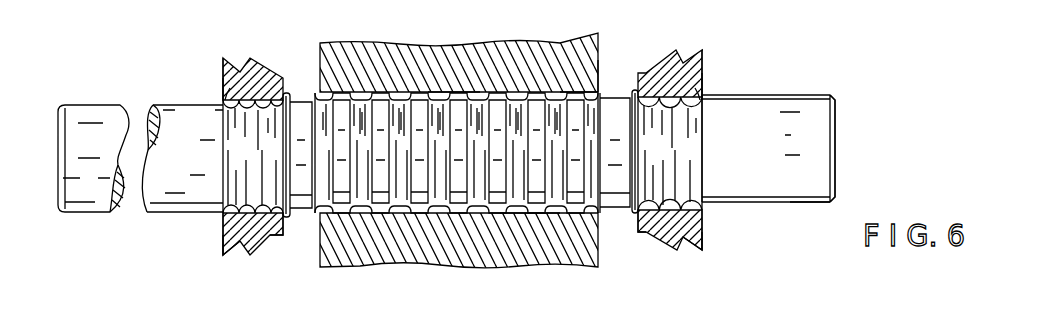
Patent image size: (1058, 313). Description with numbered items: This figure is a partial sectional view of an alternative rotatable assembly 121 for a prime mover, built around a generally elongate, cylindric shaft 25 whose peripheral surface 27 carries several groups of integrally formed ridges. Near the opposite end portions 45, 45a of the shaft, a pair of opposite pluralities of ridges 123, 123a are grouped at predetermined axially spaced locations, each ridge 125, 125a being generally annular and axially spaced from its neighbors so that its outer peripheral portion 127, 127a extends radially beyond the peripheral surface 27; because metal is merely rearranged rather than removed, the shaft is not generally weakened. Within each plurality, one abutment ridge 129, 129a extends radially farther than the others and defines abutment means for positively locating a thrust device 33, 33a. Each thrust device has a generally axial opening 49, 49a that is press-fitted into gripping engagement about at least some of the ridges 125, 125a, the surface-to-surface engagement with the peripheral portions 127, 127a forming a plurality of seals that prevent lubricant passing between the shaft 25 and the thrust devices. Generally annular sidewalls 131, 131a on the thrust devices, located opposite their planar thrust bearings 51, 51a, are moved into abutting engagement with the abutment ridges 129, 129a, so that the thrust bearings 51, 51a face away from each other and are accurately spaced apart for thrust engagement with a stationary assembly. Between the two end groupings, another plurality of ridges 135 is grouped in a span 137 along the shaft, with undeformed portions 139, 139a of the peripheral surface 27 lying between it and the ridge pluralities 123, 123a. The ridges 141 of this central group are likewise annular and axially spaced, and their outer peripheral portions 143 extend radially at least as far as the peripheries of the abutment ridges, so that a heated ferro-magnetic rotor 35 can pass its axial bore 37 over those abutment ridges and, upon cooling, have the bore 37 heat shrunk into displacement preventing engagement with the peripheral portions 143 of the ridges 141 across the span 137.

The rotatable assembly 121 is at (781, 63).
The plurality of ridges 123 is at (222, 201).
The plurality of ridges 123a is at (716, 197).
The ridge 125 is at (256, 104).
The ridge 125a is at (660, 102).
The outer peripheral portion 127 is at (238, 200).
The outer peripheral portion 127a is at (690, 200).
The abutment ridge 129 is at (288, 93).
The abutment ridge 129a is at (632, 88).
The sidewall 131 is at (284, 236).
The sidewall 131a is at (640, 232).
The plurality of ridges 135 is at (464, 222).
The span 137 is at (487, 168).
The undeformed portion of peripheral surface 139 is at (297, 216).
The undeformed portion of peripheral surface 139a is at (613, 215).
The ridge 141 is at (524, 214).
The outer peripheral portion 143 is at (477, 91).
The shaft 25 is at (827, 145).
The peripheral surface 27 is at (820, 205).
The thrust device 33 is at (228, 155).
The thrust device 33a is at (701, 151).
The rotor 35 is at (387, 43).
The bore 37 is at (572, 88).
The end portion 45 is at (93, 105).
The end portion 45a is at (817, 96).
The opening 49 is at (230, 90).
The opening 49a is at (702, 88).
The thrust bearing 51 is at (223, 238).
The thrust bearing 51a is at (704, 232).